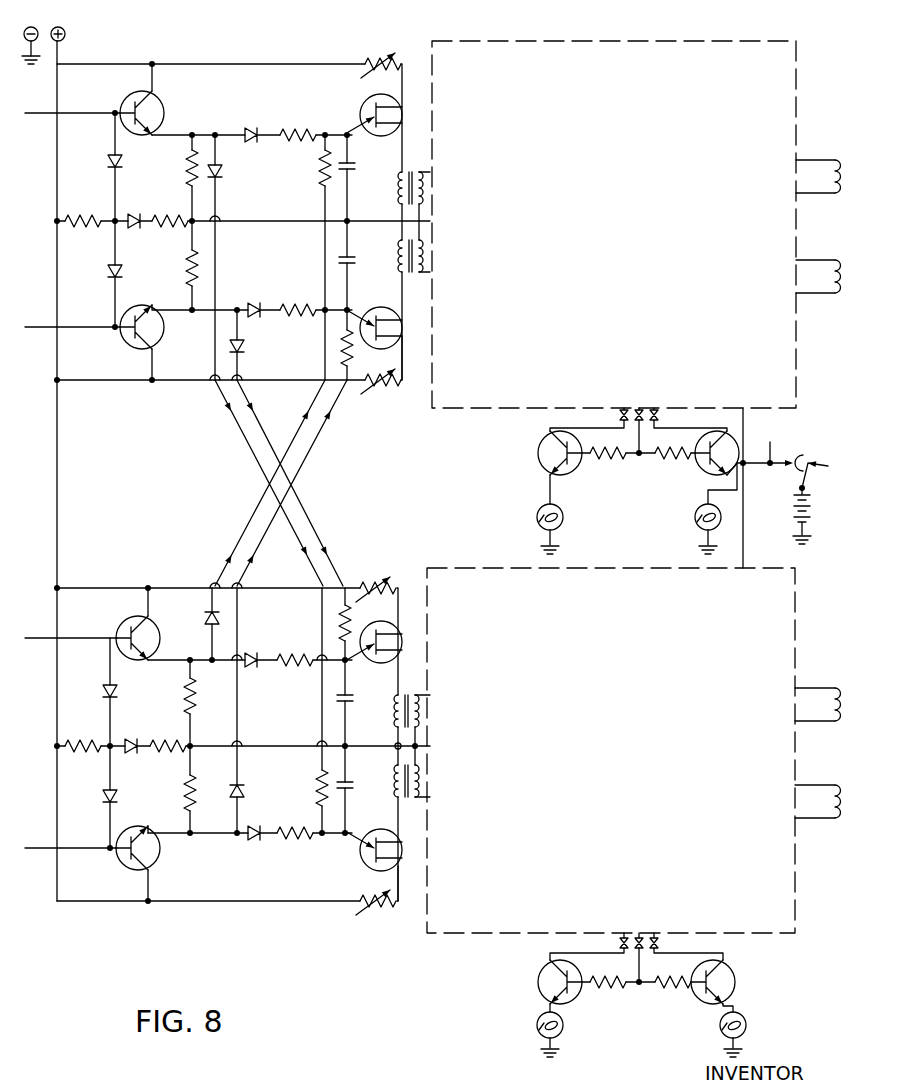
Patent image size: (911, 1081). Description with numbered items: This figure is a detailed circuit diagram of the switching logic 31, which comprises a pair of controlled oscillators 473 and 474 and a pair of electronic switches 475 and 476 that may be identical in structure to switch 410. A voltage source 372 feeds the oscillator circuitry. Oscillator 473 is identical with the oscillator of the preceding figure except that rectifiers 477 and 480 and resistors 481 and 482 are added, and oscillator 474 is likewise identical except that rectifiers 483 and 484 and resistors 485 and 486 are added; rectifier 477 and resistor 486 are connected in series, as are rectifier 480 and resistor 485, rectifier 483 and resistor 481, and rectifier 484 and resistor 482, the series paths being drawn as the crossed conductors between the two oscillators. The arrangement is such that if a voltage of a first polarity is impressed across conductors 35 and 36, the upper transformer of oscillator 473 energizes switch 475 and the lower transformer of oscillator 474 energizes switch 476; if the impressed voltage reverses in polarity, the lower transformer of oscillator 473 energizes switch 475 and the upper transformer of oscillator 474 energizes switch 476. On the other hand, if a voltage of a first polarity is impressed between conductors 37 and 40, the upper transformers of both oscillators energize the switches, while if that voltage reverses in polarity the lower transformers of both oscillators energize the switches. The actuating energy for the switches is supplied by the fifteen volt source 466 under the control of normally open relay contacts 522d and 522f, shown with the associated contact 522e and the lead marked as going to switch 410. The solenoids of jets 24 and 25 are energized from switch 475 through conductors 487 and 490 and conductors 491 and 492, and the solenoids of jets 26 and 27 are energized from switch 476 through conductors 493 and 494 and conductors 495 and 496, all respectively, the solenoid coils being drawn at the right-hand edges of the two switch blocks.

The voltage source 372 is at (42, 34).
The conductor 35 is at (46, 108).
The conductor 36 is at (43, 326).
The conductor 37 is at (40, 633).
The conductor 40 is at (45, 843).
The controlled oscillator 473 is at (285, 49).
The controlled oscillator 474 is at (238, 924).
The electronic switch 475 is at (636, 45).
The electronic switch 476 is at (580, 568).
The rectifier 477 is at (223, 177).
The rectifier 480 is at (245, 350).
The resistor 481 is at (320, 176).
The resistor 482 is at (351, 355).
The rectifier 483 is at (207, 620).
The rectifier 484 is at (243, 792).
The resistor 485 is at (183, 792).
The resistor 486 is at (315, 790).
The switching logic 31 is at (422, 484).
The jet 24 is at (834, 179).
The jet 25 is at (834, 280).
The jet 26 is at (834, 701).
The jet 27 is at (833, 798).
The conductor 487 is at (826, 156).
The conductor 490 is at (799, 194).
The conductor 491 is at (832, 260).
The conductor 492 is at (799, 294).
The conductor 493 is at (803, 688).
The conductor 494 is at (798, 721).
The conductor 495 is at (803, 785).
The conductor 496 is at (816, 818).
The switch 410 is at (776, 444).
The relay contacts 522d is at (819, 454).
The relay contact 522e is at (812, 472).
The relay contacts 522f is at (770, 480).
The 15 volt source 466 is at (794, 507).